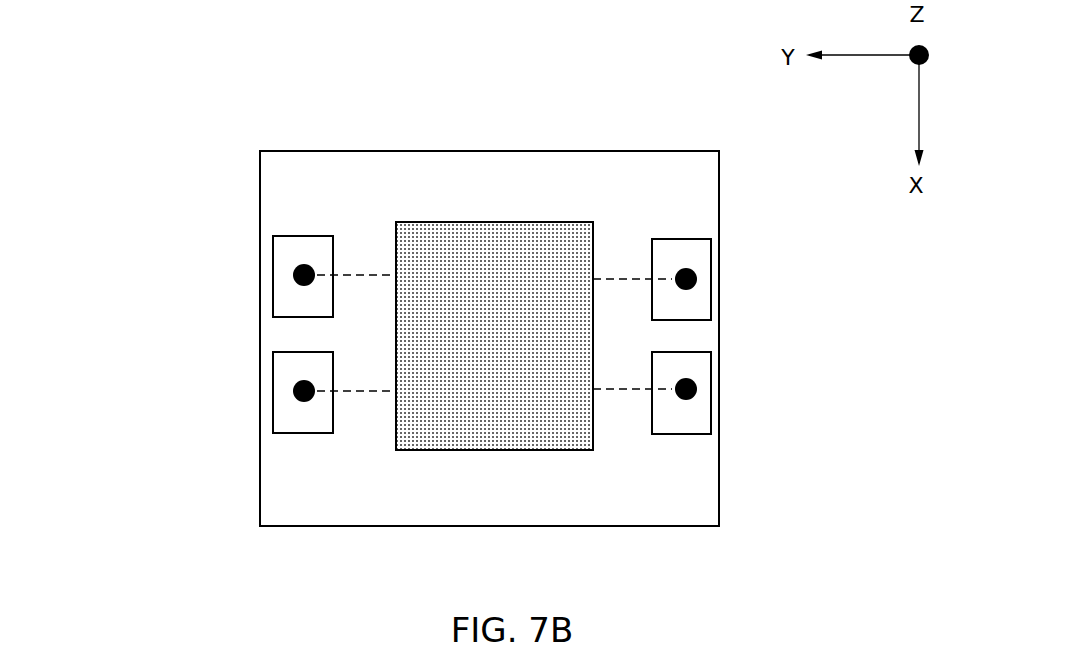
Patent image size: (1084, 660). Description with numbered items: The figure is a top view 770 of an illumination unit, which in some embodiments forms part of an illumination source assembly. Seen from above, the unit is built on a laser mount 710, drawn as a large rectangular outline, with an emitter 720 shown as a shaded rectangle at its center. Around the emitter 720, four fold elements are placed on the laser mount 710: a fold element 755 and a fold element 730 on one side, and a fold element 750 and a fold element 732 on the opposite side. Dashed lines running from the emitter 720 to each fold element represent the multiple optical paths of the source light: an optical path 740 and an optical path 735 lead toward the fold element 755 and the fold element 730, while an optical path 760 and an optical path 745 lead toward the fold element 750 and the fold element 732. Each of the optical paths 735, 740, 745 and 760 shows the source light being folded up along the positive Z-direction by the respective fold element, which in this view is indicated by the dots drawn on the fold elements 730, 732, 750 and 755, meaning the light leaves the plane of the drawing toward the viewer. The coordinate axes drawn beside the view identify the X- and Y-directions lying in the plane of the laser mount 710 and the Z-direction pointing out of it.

The laser mount 710 is at (345, 492).
The emitter 720 is at (567, 433).
The fold element 730 is at (289, 414).
The fold element 732 is at (698, 417).
The optical path 735 is at (365, 393).
The optical path 740 is at (371, 275).
The optical path 745 is at (630, 393).
The fold element 750 is at (692, 258).
The fold element 755 is at (287, 253).
The optical path 760 is at (629, 277).
The top view 770 is at (382, 273).